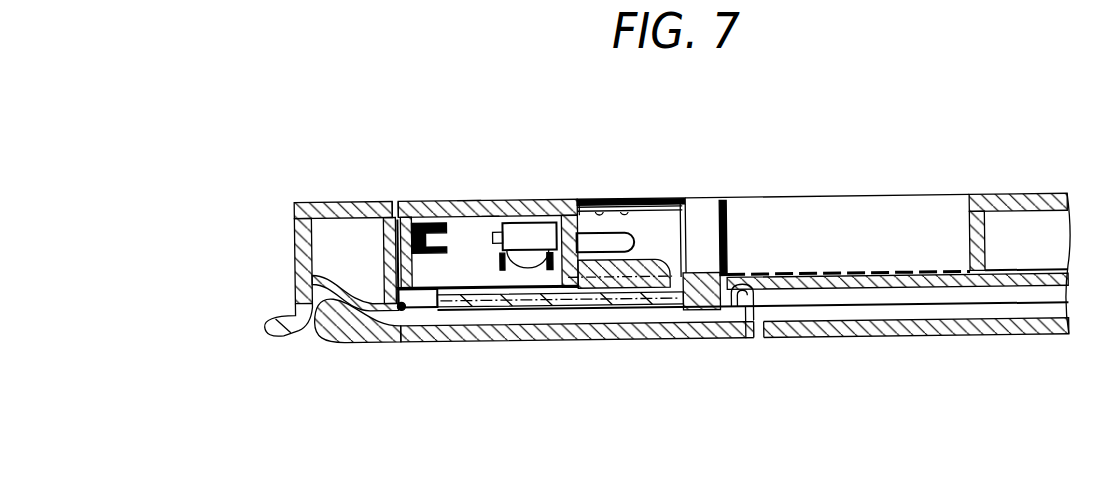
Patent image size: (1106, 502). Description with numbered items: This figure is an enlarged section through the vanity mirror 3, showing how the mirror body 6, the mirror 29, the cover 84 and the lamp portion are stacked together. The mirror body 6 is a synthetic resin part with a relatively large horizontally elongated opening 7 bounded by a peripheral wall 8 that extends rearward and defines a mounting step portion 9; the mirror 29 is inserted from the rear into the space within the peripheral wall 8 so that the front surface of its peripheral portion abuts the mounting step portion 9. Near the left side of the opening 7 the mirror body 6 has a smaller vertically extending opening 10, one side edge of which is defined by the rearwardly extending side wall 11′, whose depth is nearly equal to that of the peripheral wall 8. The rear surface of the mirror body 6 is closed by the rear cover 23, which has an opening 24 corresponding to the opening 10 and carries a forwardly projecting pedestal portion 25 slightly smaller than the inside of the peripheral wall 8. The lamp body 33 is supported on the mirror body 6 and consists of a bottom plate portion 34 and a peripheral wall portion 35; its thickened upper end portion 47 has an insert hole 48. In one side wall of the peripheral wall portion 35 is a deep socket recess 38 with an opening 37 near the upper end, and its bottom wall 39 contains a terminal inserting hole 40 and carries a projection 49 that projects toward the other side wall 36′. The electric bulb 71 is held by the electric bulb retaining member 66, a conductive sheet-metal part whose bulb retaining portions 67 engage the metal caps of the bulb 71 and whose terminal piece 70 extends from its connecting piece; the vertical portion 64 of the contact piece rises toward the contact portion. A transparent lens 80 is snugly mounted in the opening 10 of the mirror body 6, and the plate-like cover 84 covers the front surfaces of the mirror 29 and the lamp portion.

The vanity mirror 3 is at (899, 164).
The mirror body 6 is at (280, 335).
The opening 7 is at (733, 337).
The peripheral wall 8 is at (731, 237).
The mounting step portion 9 is at (757, 340).
The opening 10 is at (379, 340).
The side wall 11′ is at (378, 238).
The rear cover 23 is at (298, 203).
The opening 24 is at (398, 205).
The pedestal portion 25 is at (988, 242).
The mirror 29 is at (893, 293).
The lamp body 33 is at (518, 201).
The bottom plate portion 34 is at (470, 201).
The peripheral wall portion 35 is at (398, 242).
The side wall 36′ is at (414, 333).
The opening 37 is at (630, 233).
The socket recess 38 is at (606, 210).
The bottom wall 39 is at (584, 308).
The terminal inserting hole 40 is at (582, 200).
The upper end portion 47 is at (488, 201).
The insert hole 48 is at (430, 205).
The projection 49 is at (492, 240).
The vertical portion 64 is at (434, 305).
The electric bulb retaining member 66 is at (543, 223).
The bulb retaining portion 67 is at (500, 268).
The terminal piece 70 is at (658, 202).
The electric bulb 71 is at (521, 270).
The lens 80 is at (637, 308).
The cover 84 is at (840, 340).